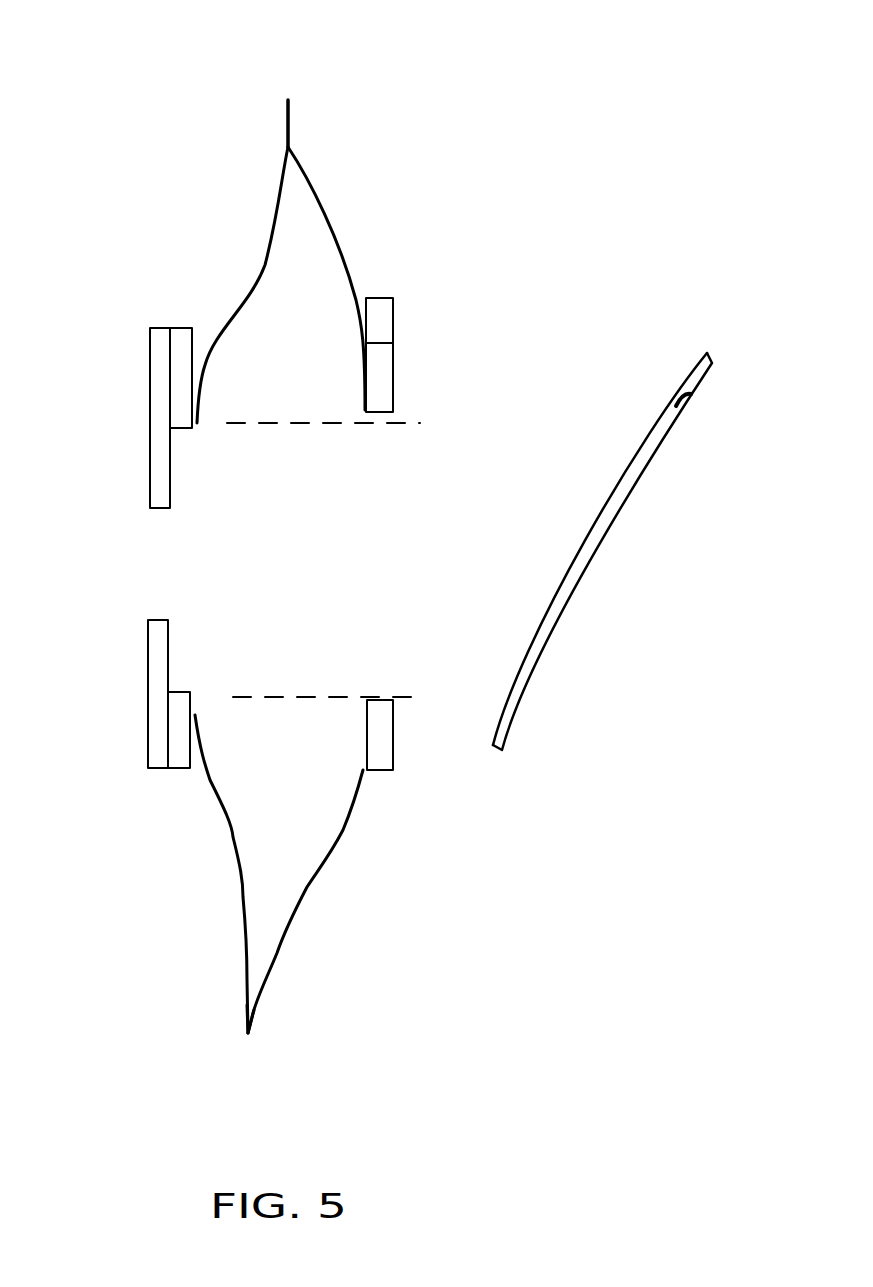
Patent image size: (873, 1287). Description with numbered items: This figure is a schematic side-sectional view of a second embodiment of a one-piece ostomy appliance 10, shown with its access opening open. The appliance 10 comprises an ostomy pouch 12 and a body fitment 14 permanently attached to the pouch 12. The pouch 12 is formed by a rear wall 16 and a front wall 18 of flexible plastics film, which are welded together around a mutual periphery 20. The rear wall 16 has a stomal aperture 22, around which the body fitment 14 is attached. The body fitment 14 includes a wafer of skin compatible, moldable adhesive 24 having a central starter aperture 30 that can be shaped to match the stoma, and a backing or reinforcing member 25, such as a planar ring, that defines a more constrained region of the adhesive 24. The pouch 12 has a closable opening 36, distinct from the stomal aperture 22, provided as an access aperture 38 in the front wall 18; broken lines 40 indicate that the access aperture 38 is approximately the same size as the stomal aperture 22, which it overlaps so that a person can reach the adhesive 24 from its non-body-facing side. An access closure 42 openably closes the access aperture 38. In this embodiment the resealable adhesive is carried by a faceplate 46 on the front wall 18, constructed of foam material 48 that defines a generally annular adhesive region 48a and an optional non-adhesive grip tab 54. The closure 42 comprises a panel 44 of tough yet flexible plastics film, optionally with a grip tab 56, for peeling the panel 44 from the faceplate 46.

The ostomy appliance 10 is at (385, 80).
The ostomy pouch 12 is at (317, 114).
The body fitment 14 is at (164, 294).
The rear wall 16 is at (278, 193).
The front wall 18 is at (333, 197).
The mutual periphery 20 is at (252, 1030).
The stomal aperture 22 is at (249, 574).
The skin compatible adhesive 24 is at (142, 430).
The backing or reinforcing member 25 is at (173, 732).
The central starter aperture 30 is at (152, 567).
The closable opening 36 is at (425, 549).
The access aperture 38 is at (607, 332).
The broken lines 40 is at (297, 695).
The access closure 42 is at (603, 597).
The panel 44 is at (565, 613).
The faceplate 46 is at (393, 343).
The foam material 48 is at (428, 540).
The annular adhesive region 48a is at (383, 392).
The grip tab 54 is at (383, 317).
The grip tab 56 is at (713, 372).